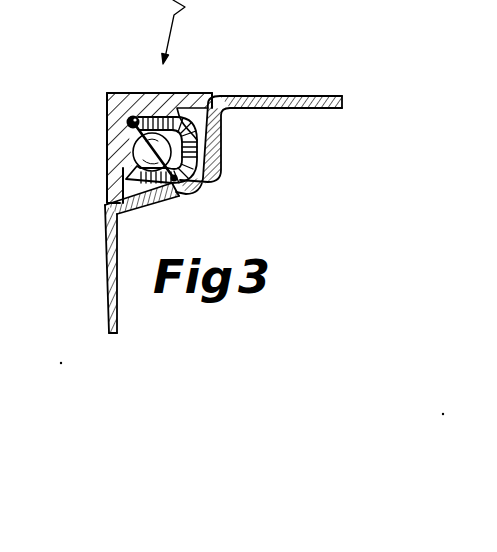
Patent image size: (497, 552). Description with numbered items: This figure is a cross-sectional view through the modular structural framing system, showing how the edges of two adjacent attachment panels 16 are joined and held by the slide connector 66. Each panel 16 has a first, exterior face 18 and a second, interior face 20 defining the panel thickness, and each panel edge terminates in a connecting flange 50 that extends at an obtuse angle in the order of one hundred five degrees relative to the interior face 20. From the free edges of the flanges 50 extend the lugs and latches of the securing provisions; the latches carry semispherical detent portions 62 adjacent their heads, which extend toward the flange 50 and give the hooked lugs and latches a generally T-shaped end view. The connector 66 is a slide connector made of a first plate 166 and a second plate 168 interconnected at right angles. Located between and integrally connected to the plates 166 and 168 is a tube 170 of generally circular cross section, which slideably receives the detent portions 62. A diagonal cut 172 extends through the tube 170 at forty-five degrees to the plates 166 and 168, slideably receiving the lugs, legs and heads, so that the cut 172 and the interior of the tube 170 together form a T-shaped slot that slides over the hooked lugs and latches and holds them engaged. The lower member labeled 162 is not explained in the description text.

The upper member 16 is at (312, 90).
The flange 18 is at (330, 97).
The flange end 20 is at (340, 109).
The bracket 50 is at (193, 178).
The spring clip 62 is at (132, 152).
The inner wall 66 is at (102, 90).
The lower member 162 is at (100, 297).
The top surface of block 166 is at (156, 69).
The retainer block 168 is at (121, 123).
The flange tip 170 is at (176, 200).
The wire hook 172 is at (136, 116).